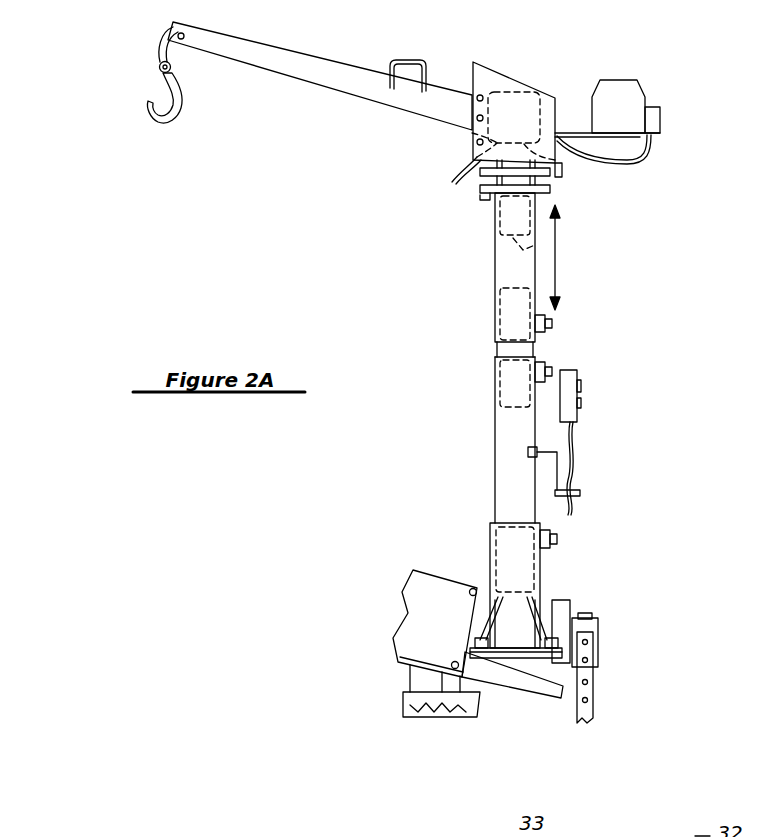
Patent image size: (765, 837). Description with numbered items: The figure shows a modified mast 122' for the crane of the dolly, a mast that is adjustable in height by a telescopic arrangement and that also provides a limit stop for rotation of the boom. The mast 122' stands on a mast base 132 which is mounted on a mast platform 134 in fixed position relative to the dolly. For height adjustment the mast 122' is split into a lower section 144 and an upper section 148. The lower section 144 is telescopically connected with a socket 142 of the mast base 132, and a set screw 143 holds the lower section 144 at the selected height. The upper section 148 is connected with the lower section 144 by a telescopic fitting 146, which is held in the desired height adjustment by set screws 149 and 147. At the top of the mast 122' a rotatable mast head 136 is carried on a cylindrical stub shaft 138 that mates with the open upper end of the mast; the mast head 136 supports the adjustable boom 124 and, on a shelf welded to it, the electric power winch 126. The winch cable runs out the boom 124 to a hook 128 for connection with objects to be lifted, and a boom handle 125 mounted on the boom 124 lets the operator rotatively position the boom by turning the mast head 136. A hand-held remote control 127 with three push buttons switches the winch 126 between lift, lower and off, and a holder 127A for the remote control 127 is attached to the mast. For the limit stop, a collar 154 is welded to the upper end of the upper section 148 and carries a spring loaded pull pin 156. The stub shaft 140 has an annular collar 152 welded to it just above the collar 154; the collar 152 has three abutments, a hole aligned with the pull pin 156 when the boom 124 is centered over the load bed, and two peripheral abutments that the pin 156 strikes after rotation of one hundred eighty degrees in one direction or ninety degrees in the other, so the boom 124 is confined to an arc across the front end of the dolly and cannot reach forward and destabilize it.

The modified mast 122' is at (425, 269).
The boom 124 is at (312, 57).
The boom handle 125 is at (410, 62).
The power winch 126 is at (620, 88).
The hand-held remote control 127 is at (163, 33).
The holder 127A is at (558, 470).
The hook 128 is at (163, 117).
The mast base 132 is at (515, 620).
The mast platform 134 is at (523, 667).
The mast head 136 is at (498, 83).
The stub shaft 138 is at (472, 133).
The stub shaft 140 is at (535, 245).
The socket 142 is at (540, 565).
The set screw 143 is at (557, 537).
The lower section 144 is at (497, 448).
The telescopic fitting 146 is at (495, 343).
The set screw 147 is at (552, 362).
The upper section 148 is at (533, 262).
The set screw 149 is at (552, 323).
The annular collar 152 is at (553, 173).
The collar 154 is at (553, 192).
The pull pin 156 is at (480, 195).